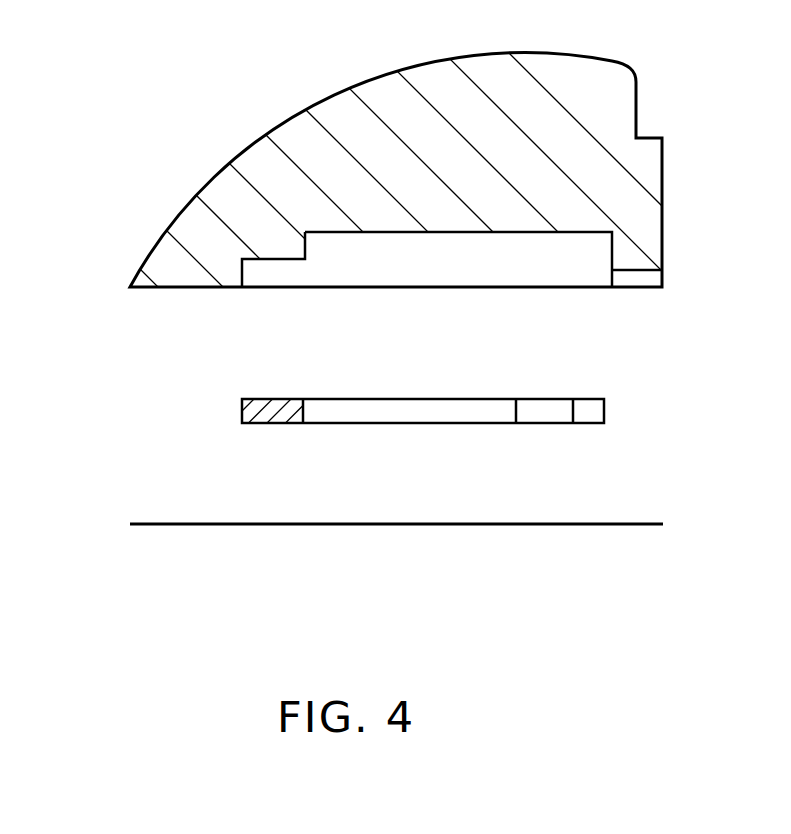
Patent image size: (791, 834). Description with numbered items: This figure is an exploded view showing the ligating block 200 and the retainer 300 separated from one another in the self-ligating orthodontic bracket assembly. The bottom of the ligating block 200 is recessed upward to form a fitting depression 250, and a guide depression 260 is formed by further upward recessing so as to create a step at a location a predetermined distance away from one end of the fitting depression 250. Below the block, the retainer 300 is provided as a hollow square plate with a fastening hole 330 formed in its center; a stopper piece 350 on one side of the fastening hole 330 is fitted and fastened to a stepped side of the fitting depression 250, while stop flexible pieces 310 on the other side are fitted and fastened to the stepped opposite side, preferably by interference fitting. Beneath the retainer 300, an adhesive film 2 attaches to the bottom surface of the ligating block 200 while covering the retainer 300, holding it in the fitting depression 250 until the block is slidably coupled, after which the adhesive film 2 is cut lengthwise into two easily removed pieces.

The ligating block 200 is at (160, 176).
The fitting depression 250 is at (282, 257).
The guide depression 260 is at (388, 247).
The retainer 300 is at (329, 410).
The stop flexible pieces 310 is at (545, 413).
The fastening hole 330 is at (433, 415).
The stopper piece 350 is at (241, 413).
The adhesive film 2 is at (230, 525).